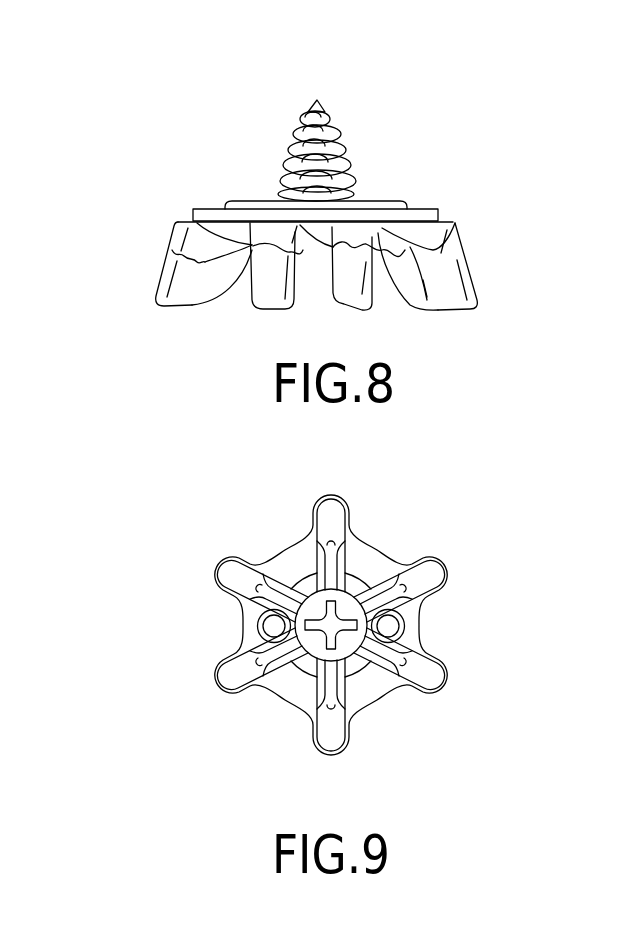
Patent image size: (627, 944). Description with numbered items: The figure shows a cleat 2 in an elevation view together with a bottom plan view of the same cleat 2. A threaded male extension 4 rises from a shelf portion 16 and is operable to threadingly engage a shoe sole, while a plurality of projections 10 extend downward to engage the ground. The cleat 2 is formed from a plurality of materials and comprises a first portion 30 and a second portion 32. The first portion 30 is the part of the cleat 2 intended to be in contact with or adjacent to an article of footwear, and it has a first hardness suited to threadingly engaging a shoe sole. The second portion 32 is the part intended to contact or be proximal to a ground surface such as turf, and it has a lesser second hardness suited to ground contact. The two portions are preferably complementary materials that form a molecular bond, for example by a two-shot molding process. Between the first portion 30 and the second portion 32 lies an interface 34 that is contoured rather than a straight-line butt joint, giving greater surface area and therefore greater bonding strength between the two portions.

In FIG. 8, the cleat 2 is at (242, 146).
In FIG. 8, the threaded male extension 4 is at (372, 92).
In FIG. 8, the projections 10 is at (316, 304).
In FIG. 8, the shelf portion 16 is at (388, 185).
In FIG. 8, the first portion 30 is at (459, 204).
In FIG. 9, the first portion 30 is at (440, 622).
In FIG. 8, the second portion 32 is at (478, 322).
In FIG. 9, the second portion 32 is at (346, 741).
In FIG. 8, the interface 34 is at (486, 248).